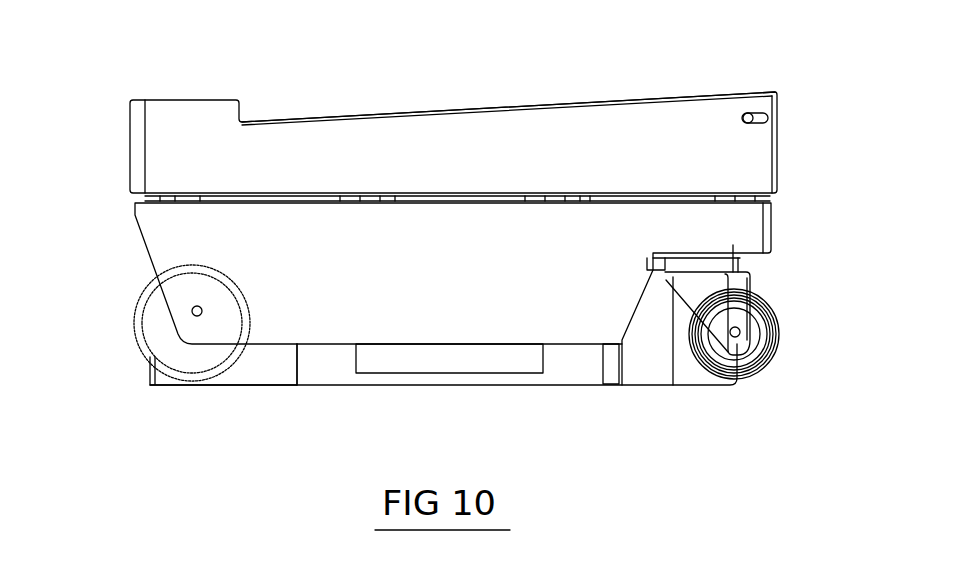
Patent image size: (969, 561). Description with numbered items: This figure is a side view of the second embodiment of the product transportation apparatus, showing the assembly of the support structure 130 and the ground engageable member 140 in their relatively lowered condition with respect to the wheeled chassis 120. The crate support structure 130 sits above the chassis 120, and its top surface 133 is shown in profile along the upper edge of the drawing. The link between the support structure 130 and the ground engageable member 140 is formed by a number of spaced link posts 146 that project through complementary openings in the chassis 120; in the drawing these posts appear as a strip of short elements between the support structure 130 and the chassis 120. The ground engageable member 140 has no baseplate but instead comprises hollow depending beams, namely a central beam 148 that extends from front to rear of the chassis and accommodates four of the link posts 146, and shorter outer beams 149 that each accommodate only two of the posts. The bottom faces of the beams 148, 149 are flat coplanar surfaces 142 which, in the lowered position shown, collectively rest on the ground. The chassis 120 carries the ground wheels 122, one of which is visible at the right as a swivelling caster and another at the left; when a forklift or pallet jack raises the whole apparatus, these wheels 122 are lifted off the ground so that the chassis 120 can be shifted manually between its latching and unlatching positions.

The support structure 130 is at (128, 175).
The top surface of cover 133 is at (598, 150).
The link posts 146 is at (331, 192).
The wheeled chassis 120 is at (775, 226).
The central beam 148 is at (273, 372).
The outer beams 149 is at (476, 375).
The flat coplanar surfaces 142 is at (567, 385).
The ground engageable member 140 is at (660, 388).
The ground wheels 122 is at (783, 326).